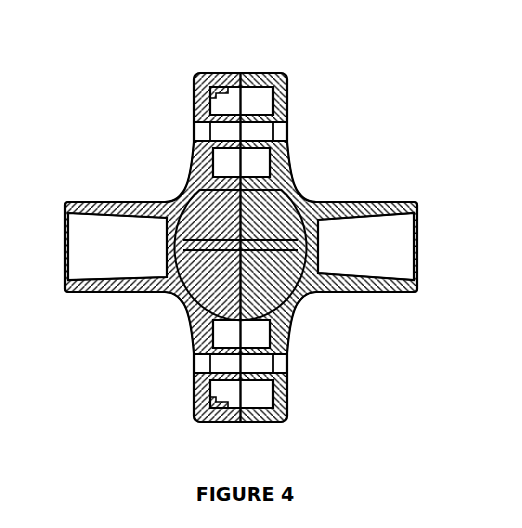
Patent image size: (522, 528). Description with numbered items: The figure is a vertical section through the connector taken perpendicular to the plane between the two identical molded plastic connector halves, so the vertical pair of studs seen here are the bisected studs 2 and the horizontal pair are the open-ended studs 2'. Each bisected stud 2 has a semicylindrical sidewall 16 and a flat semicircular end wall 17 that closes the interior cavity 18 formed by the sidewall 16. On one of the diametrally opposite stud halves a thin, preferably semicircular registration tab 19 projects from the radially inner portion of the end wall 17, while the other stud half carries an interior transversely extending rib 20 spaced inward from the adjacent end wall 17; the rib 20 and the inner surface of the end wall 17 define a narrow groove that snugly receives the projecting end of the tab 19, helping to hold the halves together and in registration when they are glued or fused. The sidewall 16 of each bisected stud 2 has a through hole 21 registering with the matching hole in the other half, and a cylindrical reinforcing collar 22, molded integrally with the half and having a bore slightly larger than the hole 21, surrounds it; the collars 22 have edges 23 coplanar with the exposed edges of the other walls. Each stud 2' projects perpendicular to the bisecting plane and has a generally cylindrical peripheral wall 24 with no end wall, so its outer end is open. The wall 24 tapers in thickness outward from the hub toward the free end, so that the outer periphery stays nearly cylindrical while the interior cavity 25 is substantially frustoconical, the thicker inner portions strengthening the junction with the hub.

The bisected stud 2 is at (241, 230).
The stud 2' is at (423, 230).
The semicylindrical sidewall 16 is at (283, 95).
The end wall 17 is at (262, 74).
The interior cavity 18 is at (258, 161).
The registration tab 19 is at (228, 74).
The rib 20 is at (205, 96).
The through hole 21 is at (283, 133).
The reinforcing collar 22 is at (194, 153).
The edge 23 is at (241, 255).
The peripheral wall 24 is at (370, 203).
The interior cavity 25 is at (389, 250).